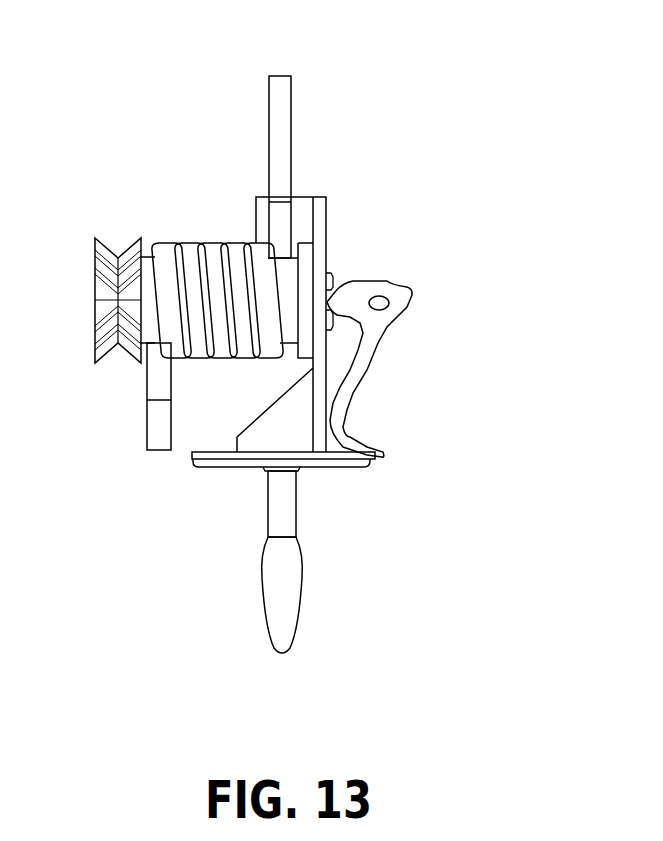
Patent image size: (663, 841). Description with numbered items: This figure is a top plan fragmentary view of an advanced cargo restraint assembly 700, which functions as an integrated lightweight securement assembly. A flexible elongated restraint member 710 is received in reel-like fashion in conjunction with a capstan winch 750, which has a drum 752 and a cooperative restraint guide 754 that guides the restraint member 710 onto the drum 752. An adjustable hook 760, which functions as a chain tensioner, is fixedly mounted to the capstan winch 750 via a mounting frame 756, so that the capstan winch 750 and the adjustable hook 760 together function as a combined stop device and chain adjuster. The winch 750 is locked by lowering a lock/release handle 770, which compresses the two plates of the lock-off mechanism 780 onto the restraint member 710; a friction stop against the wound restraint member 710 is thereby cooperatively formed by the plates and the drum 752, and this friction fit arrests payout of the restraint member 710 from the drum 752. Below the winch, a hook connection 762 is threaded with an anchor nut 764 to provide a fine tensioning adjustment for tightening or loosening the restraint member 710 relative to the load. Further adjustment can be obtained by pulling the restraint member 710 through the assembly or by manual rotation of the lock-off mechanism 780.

The advanced cargo restraint assembly 700 is at (165, 118).
The flexible elongated restraint member 710 is at (280, 120).
The capstan winch 750 is at (432, 232).
The drum 752 is at (285, 275).
The restraint guide 754 is at (326, 203).
The mounting frame 756 is at (297, 433).
The adjustable hook 760 is at (282, 590).
The hook connection 762 is at (278, 495).
The anchor nut 764 is at (260, 468).
The lock/release handle 770 is at (365, 343).
The lock-off mechanism 780 is at (127, 245).